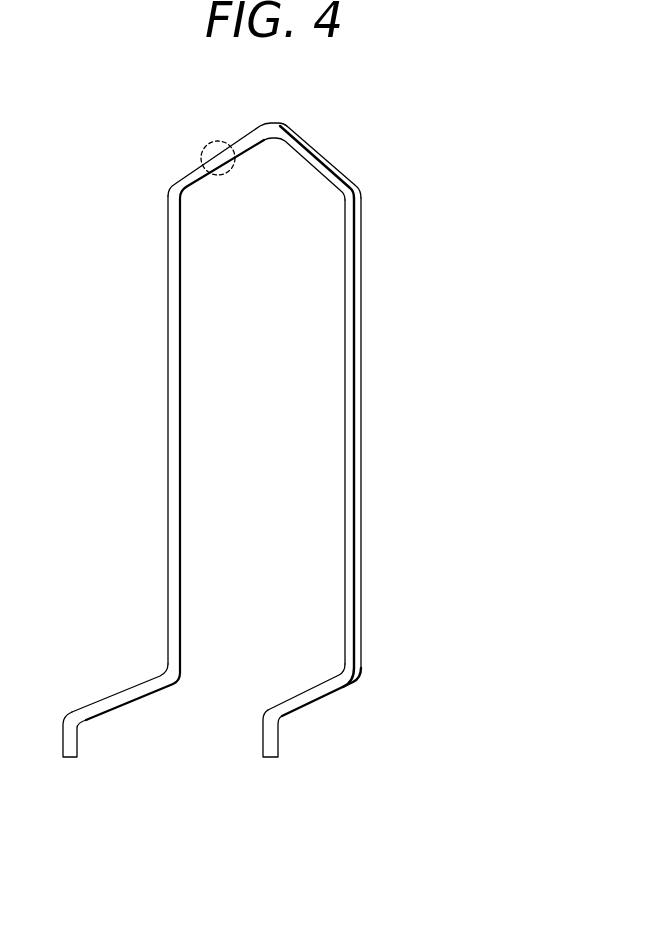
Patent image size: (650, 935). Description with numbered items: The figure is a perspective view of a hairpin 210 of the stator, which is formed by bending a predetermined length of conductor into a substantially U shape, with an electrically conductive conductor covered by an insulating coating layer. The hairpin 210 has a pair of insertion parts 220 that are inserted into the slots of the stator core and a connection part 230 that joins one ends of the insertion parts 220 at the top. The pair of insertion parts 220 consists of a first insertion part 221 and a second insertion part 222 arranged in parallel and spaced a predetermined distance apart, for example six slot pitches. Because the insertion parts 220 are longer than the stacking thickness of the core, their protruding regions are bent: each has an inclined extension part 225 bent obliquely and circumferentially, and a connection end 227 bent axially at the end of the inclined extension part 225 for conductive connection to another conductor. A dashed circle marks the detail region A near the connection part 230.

The hairpin 210 is at (416, 196).
The insertion parts 220 is at (438, 345).
The first insertion part 221 is at (352, 445).
The second insertion part 222 is at (175, 386).
The inclined extension part 225 is at (297, 701).
The connection end 227 is at (268, 758).
The connection part 230 is at (323, 152).
The detail region A is at (204, 141).